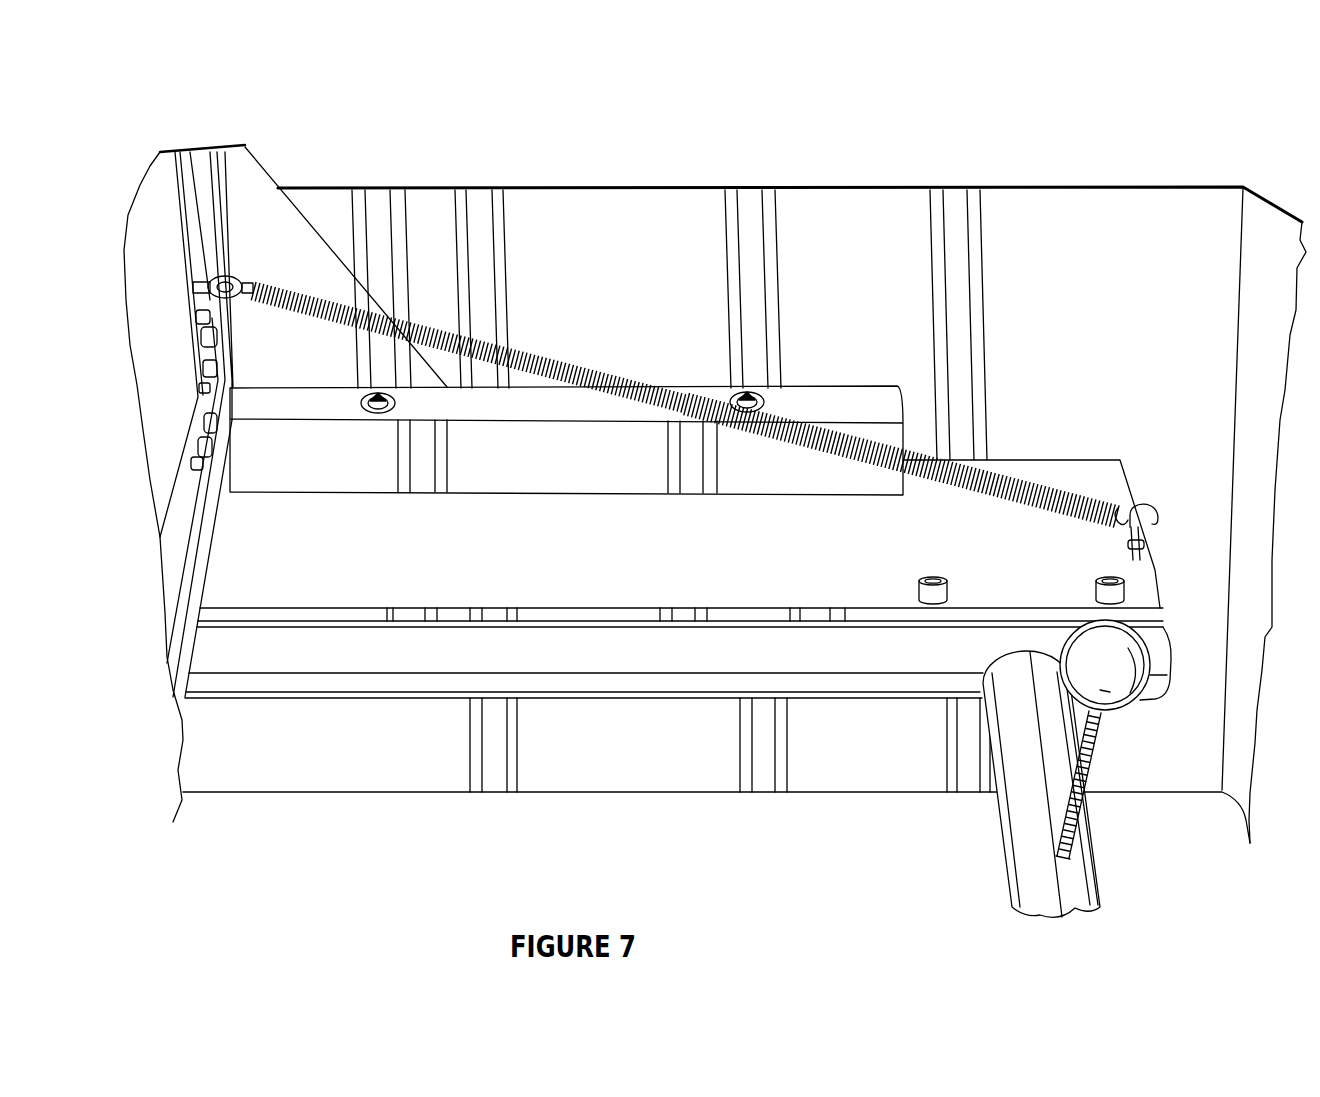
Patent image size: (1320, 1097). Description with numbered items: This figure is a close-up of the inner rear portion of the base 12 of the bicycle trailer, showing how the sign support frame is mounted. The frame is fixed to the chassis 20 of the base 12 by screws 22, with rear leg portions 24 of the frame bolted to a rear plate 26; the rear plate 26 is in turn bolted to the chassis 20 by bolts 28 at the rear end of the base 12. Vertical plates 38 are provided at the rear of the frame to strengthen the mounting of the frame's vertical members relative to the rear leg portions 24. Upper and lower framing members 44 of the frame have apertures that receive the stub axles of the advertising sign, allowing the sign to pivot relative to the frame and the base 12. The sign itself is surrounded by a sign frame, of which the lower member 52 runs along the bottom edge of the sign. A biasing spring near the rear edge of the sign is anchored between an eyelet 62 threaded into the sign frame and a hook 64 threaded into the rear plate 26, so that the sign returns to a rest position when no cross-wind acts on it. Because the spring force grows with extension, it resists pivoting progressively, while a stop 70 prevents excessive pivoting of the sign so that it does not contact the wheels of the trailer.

The base 12 is at (1087, 101).
The chassis 20 is at (992, 628).
The screws 22 is at (377, 413).
The rear leg portions 24 is at (533, 462).
The rear plate 26 is at (716, 651).
The bolts 28 is at (932, 576).
The vertical plates 38 is at (715, 494).
The framing members 44 is at (205, 575).
The lower member 52 is at (183, 498).
The eyelets 62 is at (226, 277).
The hooks 64 is at (1150, 508).
The stops 70 is at (1105, 665).